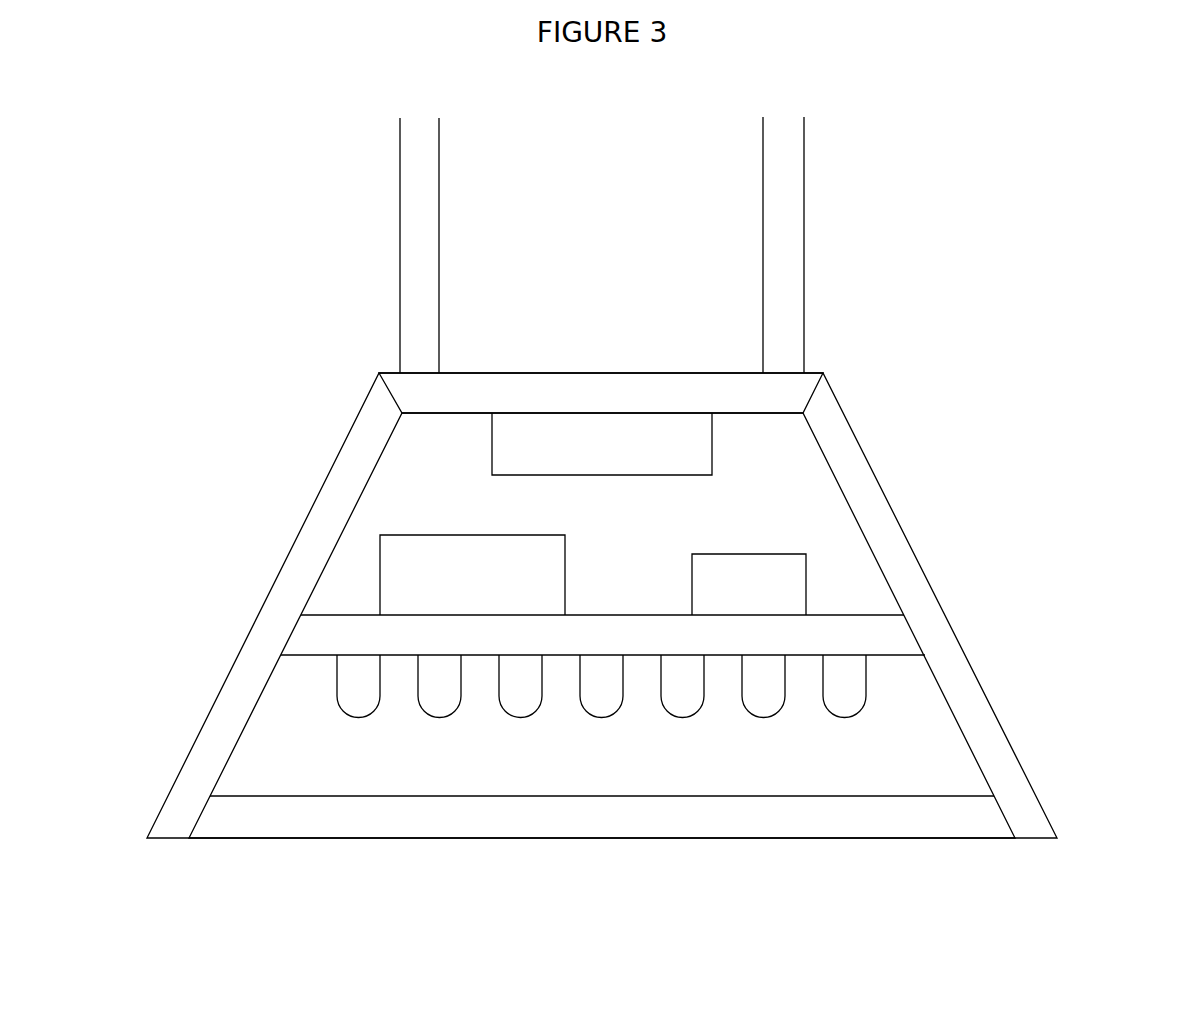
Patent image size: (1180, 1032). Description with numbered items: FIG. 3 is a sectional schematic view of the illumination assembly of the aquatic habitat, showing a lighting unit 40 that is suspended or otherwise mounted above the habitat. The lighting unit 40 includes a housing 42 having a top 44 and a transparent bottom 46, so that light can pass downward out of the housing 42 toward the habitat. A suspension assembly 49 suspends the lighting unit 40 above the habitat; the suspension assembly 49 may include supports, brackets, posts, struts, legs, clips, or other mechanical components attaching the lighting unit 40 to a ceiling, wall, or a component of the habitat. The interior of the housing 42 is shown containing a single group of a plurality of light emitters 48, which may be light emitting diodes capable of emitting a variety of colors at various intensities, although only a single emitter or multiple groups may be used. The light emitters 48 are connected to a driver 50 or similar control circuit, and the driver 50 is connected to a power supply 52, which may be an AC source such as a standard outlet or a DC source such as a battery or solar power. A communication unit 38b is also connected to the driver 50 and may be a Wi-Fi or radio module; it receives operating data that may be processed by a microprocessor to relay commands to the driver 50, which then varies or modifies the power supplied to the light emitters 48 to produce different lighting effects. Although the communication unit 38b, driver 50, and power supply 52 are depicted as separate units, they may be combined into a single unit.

The lighting unit 40 is at (990, 208).
The housing 42 is at (347, 438).
The top 44 is at (482, 390).
The transparent bottom 46 is at (643, 818).
The light emitters 48 is at (866, 697).
The suspension assembly 49 is at (400, 155).
The driver 50 is at (432, 567).
The power supply 52 is at (806, 585).
The communication unit 38b is at (697, 437).